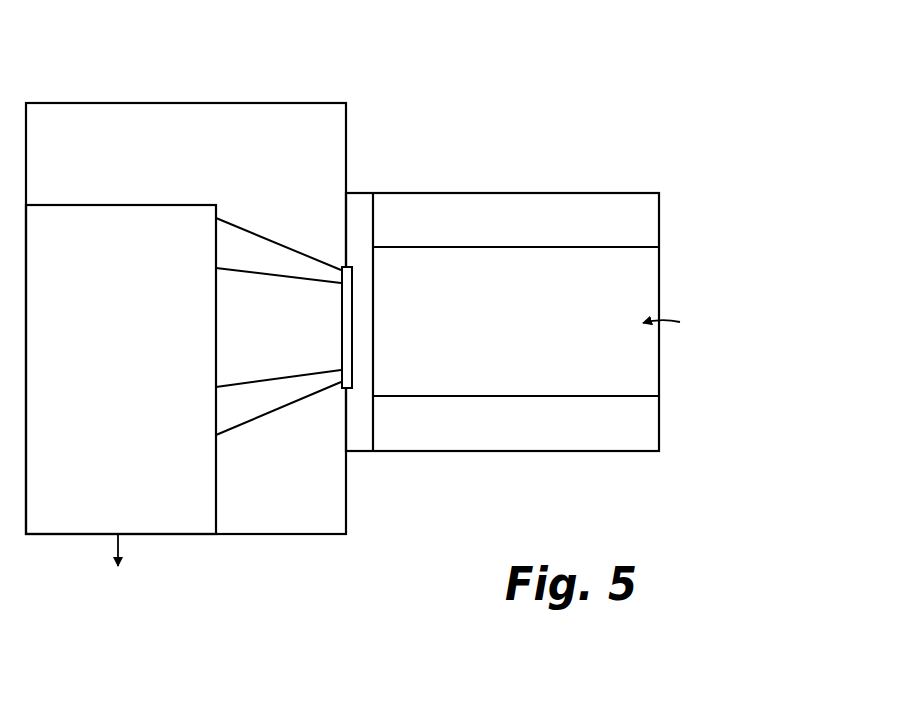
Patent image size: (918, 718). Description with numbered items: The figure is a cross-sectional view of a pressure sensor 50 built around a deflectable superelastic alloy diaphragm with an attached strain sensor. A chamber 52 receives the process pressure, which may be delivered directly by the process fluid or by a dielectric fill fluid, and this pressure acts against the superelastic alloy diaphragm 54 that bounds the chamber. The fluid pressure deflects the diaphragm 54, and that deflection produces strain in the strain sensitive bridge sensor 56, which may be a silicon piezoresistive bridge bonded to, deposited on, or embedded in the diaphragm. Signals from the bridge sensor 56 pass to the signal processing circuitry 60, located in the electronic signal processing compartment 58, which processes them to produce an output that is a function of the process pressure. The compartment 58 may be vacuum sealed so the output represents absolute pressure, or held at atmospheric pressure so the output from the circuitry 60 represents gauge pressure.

The pressure sensor 50 is at (520, 92).
The chamber 52 is at (613, 248).
The superelastic alloy diaphragm 54 is at (523, 299).
The strain sensitive bridge sensor 56 is at (341, 268).
The electronic signal processing compartment 58 is at (190, 103).
The signal processing circuitry 60 is at (92, 210).